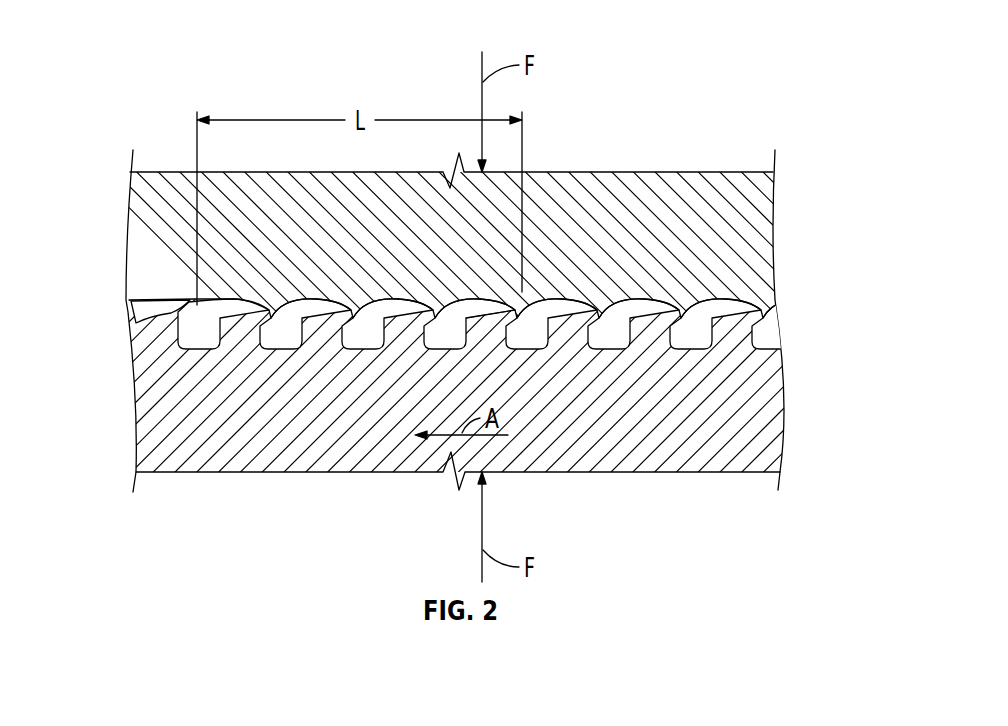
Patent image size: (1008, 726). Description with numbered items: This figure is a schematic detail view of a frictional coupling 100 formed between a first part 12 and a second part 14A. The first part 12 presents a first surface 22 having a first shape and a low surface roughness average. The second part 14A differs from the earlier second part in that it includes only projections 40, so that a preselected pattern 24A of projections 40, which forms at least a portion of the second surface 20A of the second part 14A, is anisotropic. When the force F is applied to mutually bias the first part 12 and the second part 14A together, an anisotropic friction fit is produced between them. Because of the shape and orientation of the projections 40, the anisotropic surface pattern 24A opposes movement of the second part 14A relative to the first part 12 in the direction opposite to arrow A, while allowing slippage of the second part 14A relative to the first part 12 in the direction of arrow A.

The frictional coupling 100 is at (604, 162).
The first part 12 is at (762, 242).
The second part 14A is at (777, 421).
The projections 40 is at (189, 298).
The second surface 20A is at (375, 318).
The first surface 22 is at (220, 317).
The preselected pattern of projections 24A is at (485, 337).